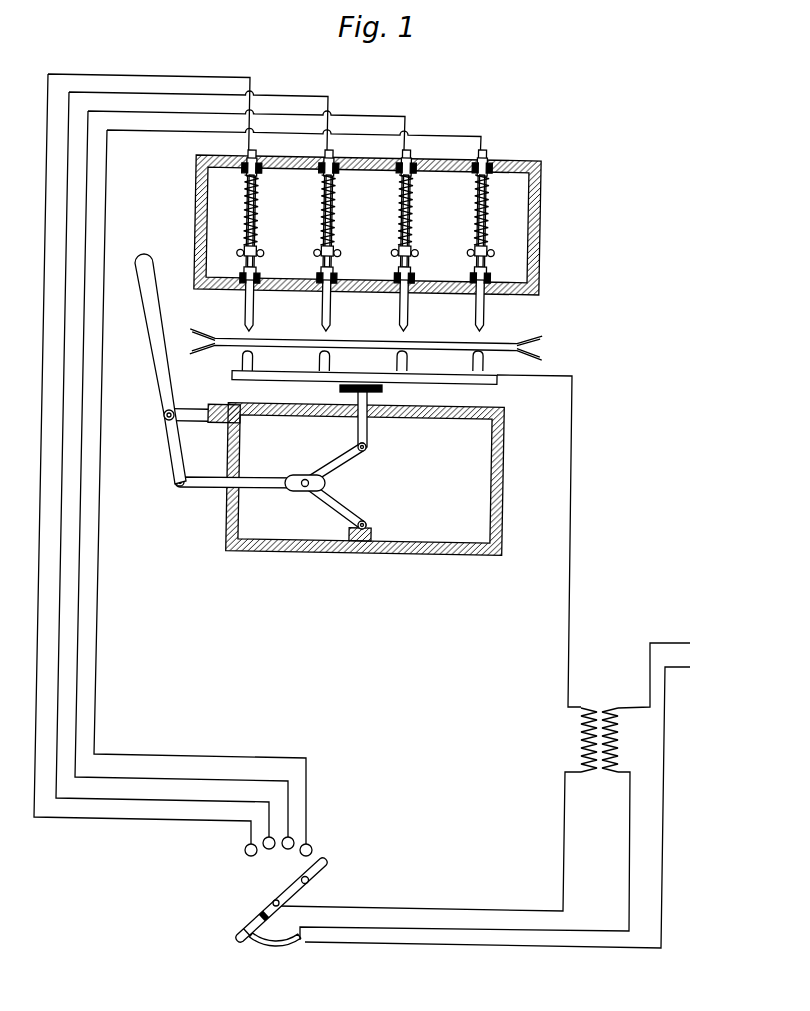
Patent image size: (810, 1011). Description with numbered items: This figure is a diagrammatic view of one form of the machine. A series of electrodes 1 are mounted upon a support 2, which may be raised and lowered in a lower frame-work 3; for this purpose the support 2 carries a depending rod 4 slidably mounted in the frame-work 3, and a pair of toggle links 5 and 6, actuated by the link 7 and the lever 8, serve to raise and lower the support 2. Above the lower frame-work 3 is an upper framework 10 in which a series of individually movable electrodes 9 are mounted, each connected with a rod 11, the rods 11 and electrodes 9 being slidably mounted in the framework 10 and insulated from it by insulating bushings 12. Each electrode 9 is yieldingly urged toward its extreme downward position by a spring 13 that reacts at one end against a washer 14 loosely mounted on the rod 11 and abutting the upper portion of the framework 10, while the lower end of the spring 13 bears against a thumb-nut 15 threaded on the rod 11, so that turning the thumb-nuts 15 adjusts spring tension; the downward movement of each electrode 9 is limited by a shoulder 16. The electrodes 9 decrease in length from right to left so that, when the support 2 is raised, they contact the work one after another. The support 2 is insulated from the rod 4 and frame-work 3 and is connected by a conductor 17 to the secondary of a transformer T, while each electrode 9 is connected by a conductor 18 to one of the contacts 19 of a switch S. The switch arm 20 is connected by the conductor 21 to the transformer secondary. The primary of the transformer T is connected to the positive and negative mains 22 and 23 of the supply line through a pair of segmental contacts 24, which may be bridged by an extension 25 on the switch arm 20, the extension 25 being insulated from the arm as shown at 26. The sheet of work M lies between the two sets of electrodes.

The electrodes 1 is at (318, 363).
The support 2 is at (493, 386).
The frame-work 3 is at (503, 493).
The depending rod 4 is at (357, 433).
The toggle link 5 is at (348, 463).
The toggle link 6 is at (343, 515).
The link 7 is at (205, 490).
The lever 8 is at (165, 392).
The individually movable electrodes 9 is at (255, 317).
The framework 10 is at (540, 258).
The rod 11 is at (259, 232).
The insulating bushings 12 is at (260, 285).
The spring 13 is at (259, 208).
The washer 14 is at (246, 172).
The thumb-nut 15 is at (241, 254).
The shoulder 16 is at (257, 270).
The conductor 17 is at (571, 470).
The conductor 18 is at (203, 130).
The contacts 19 is at (302, 856).
The switch arm 20 is at (308, 886).
The conductor 21 is at (453, 908).
The positive main 22 is at (669, 648).
The negative main 23 is at (674, 672).
The segmental contacts 24 is at (278, 950).
The extension 25 is at (232, 935).
The insulation 26 is at (262, 913).
The sheet material M is at (545, 351).
The transformer T is at (465, 809).
The switch S is at (245, 911).